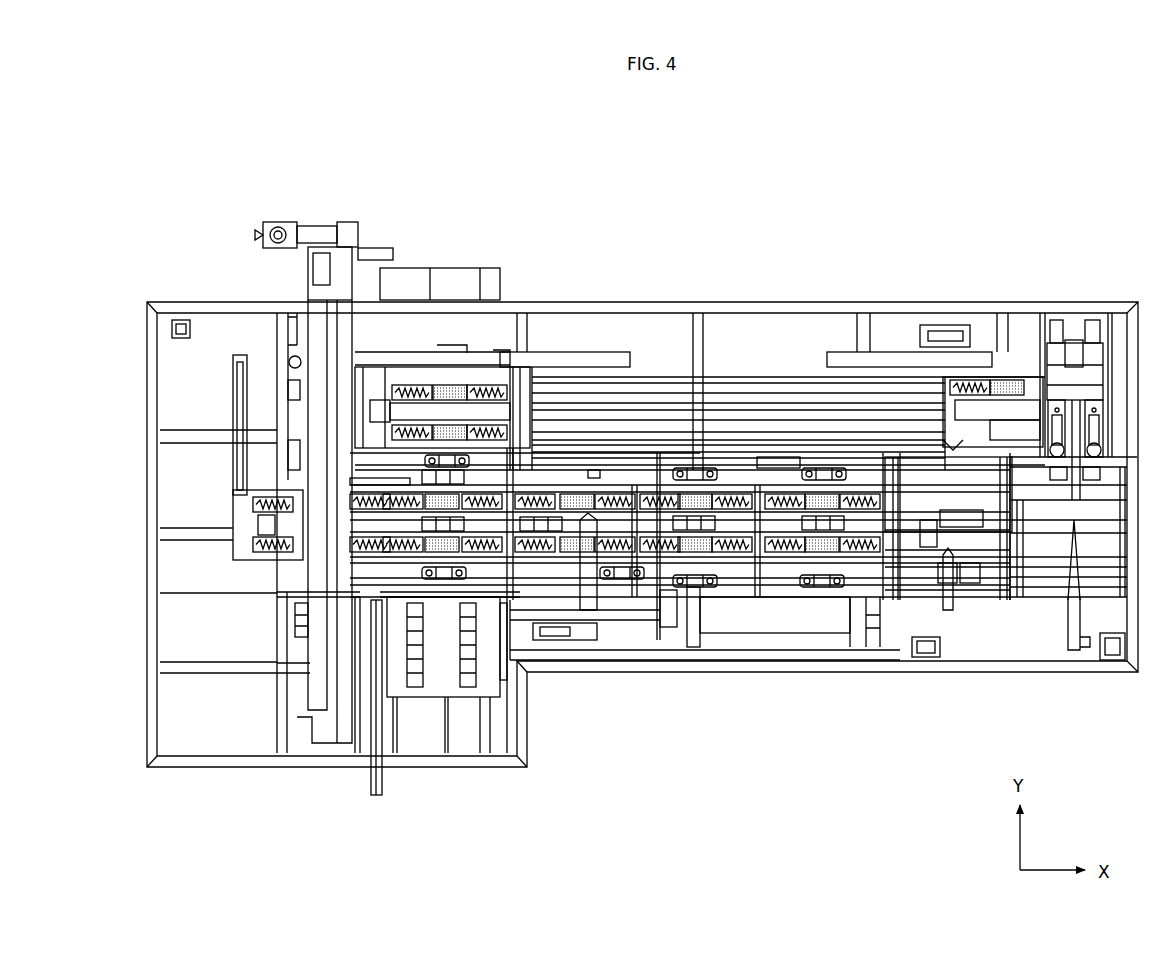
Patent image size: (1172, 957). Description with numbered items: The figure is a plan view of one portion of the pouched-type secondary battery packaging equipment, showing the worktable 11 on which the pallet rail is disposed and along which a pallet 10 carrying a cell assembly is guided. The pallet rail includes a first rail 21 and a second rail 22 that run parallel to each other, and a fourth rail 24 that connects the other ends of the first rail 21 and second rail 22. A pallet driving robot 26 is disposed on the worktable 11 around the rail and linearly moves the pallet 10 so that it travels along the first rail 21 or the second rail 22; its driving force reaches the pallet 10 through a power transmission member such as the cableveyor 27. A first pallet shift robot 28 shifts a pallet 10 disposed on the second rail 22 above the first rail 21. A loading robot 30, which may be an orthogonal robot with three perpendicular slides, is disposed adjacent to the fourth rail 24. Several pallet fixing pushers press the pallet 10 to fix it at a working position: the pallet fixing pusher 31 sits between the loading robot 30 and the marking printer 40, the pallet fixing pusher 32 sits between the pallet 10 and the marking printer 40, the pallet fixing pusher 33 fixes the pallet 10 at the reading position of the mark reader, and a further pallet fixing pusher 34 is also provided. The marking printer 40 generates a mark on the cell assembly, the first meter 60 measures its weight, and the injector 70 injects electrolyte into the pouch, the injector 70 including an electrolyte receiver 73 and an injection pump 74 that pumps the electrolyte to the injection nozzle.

The pallet 10 is at (408, 405).
The worktable 11 is at (185, 378).
The first rail 21 is at (690, 517).
The second rail 22 is at (660, 438).
The fourth rail 24 is at (287, 392).
The pallet driving robot 26 is at (611, 410).
The cableveyor 27 is at (848, 385).
The first pallet shift robot 28 is at (295, 432).
The loading robot 30 is at (322, 680).
The pallet fixing pusher 31 is at (428, 580).
The pallet fixing pusher 32 is at (609, 590).
The pallet fixing pusher 33 is at (713, 470).
The pallet fixing pusher 34 is at (812, 470).
The marking printer 40 is at (574, 700).
The first meter 60 is at (815, 577).
The injector 70 is at (983, 643).
The electrolyte receiver 73 is at (913, 507).
The injection pump 74 is at (1058, 358).